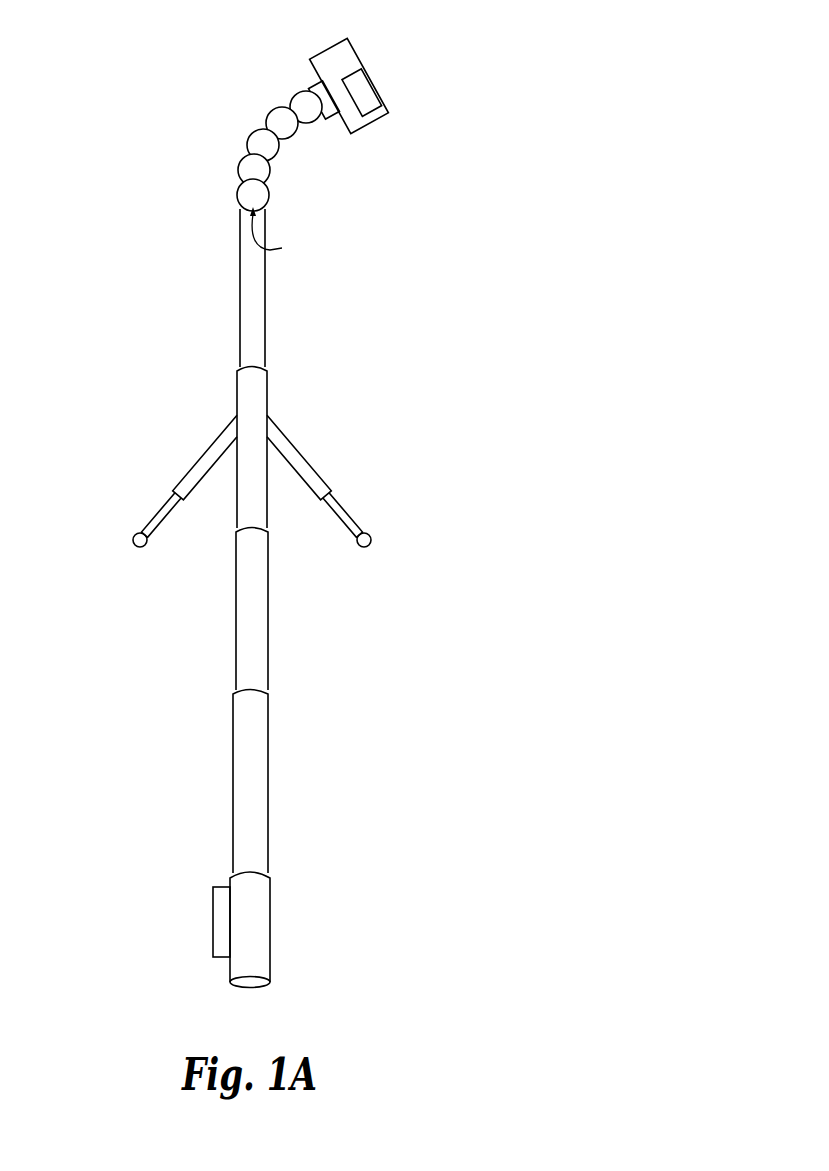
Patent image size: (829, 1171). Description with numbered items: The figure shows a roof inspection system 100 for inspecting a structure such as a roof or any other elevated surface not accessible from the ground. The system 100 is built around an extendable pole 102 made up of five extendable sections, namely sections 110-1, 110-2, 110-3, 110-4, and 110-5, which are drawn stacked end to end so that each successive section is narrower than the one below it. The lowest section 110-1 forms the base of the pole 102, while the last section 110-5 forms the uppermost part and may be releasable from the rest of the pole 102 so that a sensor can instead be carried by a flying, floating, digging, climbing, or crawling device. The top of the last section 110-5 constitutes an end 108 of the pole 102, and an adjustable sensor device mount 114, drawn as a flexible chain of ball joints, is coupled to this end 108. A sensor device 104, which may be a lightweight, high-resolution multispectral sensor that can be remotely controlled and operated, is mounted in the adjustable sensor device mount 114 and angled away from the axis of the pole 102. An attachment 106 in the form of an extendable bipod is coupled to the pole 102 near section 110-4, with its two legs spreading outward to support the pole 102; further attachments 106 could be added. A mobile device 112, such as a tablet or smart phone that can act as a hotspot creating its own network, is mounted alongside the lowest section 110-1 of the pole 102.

The roof inspection system 100 is at (244, 512).
The pole 102 is at (250, 598).
The sensor device 104 is at (367, 62).
The attachment 106 is at (210, 460).
The end of pole 108 is at (283, 233).
The section 110-1 is at (255, 913).
The section 110-2 is at (245, 753).
The section 110-3 is at (245, 595).
The section 110-4 is at (247, 392).
The section 110-5 is at (247, 277).
The mobile device 112 is at (222, 908).
The adjustable sensor device mount 114 is at (272, 150).